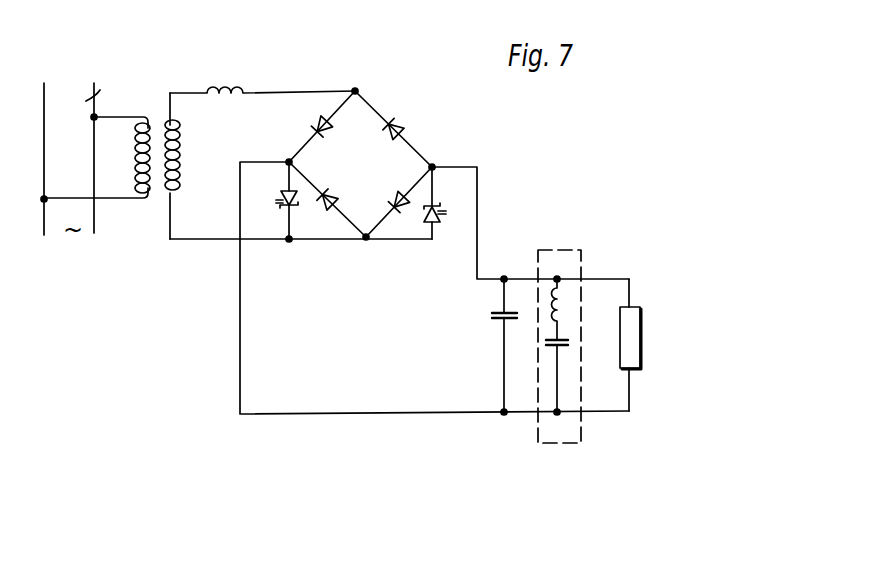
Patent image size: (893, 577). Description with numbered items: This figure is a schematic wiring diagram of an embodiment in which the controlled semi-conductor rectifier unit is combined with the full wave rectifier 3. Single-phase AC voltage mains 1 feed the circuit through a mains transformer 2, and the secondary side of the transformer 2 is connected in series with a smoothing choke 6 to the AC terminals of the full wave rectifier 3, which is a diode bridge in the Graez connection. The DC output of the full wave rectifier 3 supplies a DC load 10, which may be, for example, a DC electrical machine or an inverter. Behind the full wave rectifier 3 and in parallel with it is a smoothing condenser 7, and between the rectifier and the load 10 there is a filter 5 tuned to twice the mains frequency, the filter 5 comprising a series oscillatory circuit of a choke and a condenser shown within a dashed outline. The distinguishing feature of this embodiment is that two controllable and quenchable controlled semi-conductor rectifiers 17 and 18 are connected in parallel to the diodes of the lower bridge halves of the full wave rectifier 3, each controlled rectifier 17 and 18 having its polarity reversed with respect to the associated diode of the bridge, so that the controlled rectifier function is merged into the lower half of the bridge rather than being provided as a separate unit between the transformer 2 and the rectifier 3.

The single-phase AC voltage mains 1 is at (100, 90).
The mains transformer 2 is at (163, 106).
The full wave rectifier 3 is at (371, 177).
The filter 5 is at (563, 250).
The smoothing choke 6 is at (233, 77).
The smoothing condenser 7 is at (495, 321).
The DC load 10 is at (638, 307).
The controlled semi-conductor rectifier 17 is at (283, 188).
The controlled semi-conductor rectifier 18 is at (447, 222).